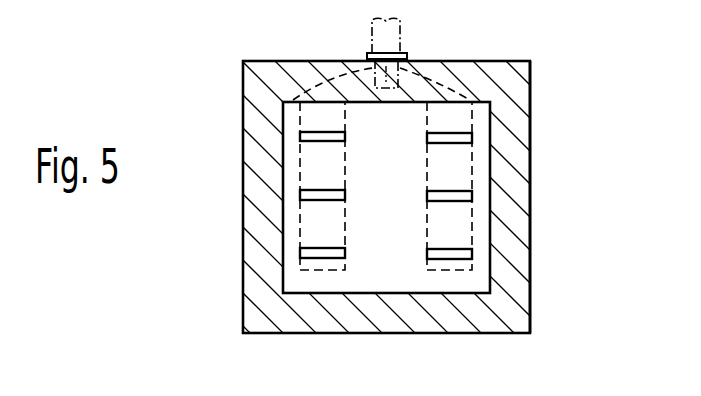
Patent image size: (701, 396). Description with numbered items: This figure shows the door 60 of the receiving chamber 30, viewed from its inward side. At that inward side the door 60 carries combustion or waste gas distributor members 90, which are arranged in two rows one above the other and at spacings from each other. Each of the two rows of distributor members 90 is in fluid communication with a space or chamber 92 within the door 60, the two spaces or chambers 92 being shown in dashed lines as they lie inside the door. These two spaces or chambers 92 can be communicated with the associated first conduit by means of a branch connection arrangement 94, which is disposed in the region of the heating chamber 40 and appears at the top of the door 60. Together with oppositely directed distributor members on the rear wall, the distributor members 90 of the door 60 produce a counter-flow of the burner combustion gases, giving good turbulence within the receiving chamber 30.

The receiving chamber 30 is at (477, 179).
The heating chamber 40 is at (508, 148).
The door 60 is at (396, 193).
The distributor members 90 is at (302, 139).
The space or chamber 92 is at (455, 122).
The branch connection arrangement 94 is at (393, 80).